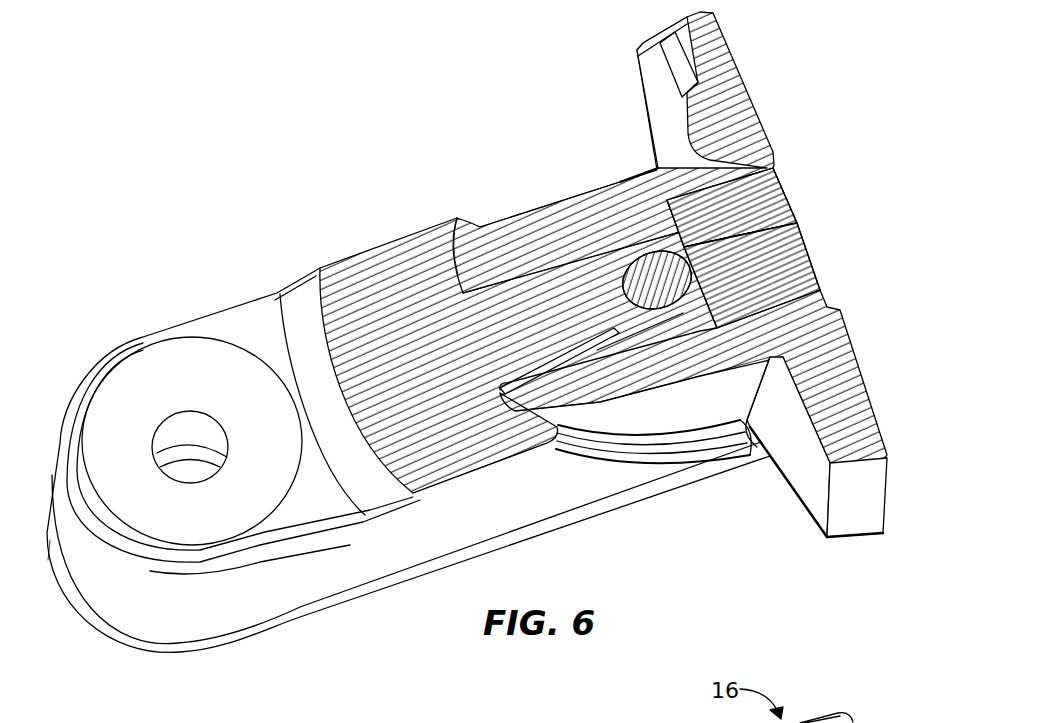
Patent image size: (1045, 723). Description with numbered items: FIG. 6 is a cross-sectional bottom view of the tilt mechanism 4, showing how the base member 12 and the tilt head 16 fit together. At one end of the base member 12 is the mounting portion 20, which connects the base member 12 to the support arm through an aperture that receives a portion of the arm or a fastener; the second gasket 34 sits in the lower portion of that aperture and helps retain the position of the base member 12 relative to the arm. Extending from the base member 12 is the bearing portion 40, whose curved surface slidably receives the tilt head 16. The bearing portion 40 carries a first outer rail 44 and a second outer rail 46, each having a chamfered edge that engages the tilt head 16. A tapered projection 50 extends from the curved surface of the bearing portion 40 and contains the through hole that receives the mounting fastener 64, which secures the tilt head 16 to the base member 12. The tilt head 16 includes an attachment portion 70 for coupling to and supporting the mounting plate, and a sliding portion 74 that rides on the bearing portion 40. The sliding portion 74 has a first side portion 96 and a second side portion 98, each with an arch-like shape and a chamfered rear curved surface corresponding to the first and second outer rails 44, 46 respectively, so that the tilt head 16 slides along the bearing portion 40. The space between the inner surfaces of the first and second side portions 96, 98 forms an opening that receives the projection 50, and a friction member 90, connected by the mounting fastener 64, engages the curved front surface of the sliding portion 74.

The lever assembly 4 is at (152, 152).
The base member 12 is at (176, 662).
The tilt head 16 is at (757, 62).
The mounting portion 20 is at (100, 573).
The second gasket 34 is at (142, 383).
The bearing portion 40 is at (378, 262).
The first outer rail 44 is at (467, 453).
The second outer rail 46 is at (450, 237).
The projection 50 is at (597, 277).
The mounting fastener 64 is at (792, 226).
The attachment portion 70 is at (868, 487).
The sliding portion 74 is at (722, 415).
The friction member 90 is at (763, 200).
The first side portion 96 is at (640, 400).
The second side portion 98 is at (527, 215).